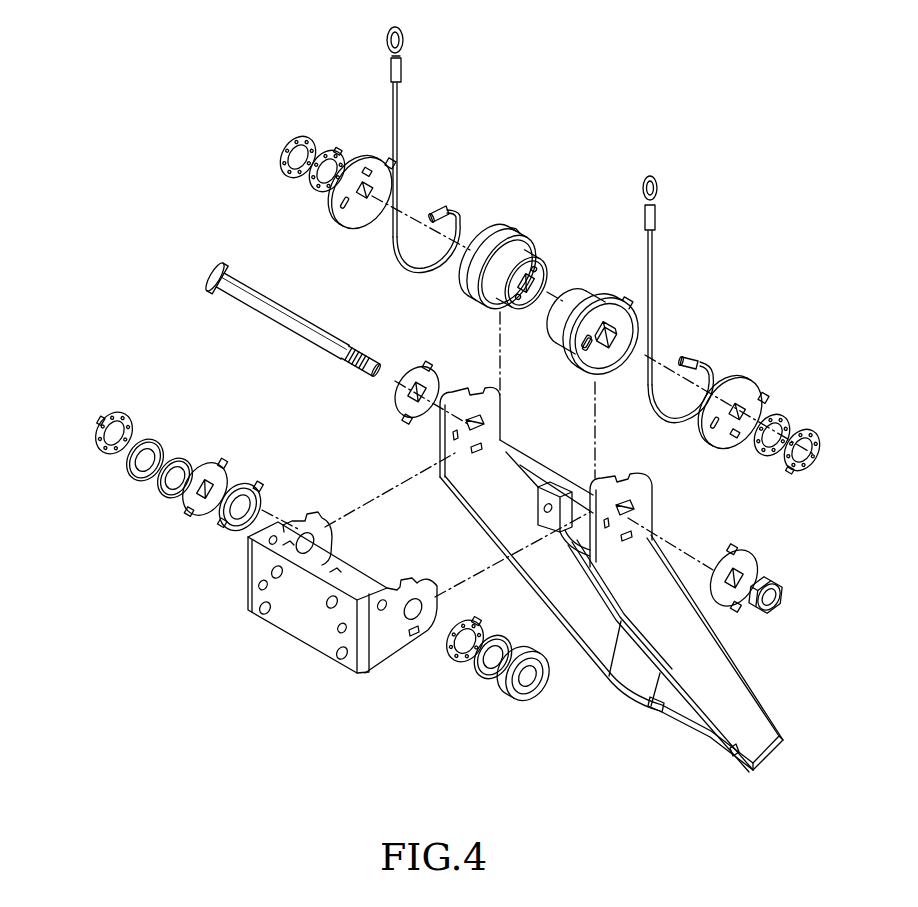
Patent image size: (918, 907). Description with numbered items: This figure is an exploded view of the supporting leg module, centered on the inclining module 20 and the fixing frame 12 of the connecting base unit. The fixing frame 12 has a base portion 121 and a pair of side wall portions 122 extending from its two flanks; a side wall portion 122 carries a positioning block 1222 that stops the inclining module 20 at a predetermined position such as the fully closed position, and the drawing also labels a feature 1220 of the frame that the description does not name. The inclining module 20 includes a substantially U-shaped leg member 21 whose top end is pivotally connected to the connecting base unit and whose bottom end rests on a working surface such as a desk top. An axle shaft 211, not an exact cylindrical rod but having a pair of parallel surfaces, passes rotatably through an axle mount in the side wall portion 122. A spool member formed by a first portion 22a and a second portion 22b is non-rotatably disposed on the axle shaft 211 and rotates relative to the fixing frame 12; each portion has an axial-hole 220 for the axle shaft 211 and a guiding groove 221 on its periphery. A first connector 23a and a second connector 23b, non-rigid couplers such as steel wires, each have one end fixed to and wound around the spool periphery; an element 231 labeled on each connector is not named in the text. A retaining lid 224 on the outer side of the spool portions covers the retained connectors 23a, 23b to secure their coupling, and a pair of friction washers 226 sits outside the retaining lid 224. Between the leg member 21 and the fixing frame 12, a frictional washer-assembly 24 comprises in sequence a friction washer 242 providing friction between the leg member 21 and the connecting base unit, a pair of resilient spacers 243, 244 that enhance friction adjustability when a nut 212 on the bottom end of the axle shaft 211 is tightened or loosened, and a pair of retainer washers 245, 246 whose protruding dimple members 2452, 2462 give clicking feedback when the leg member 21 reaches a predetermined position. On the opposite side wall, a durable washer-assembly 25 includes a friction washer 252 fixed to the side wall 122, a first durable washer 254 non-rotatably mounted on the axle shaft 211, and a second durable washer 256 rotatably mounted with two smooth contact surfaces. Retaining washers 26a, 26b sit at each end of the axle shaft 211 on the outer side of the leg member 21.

The inclining module 20 is at (575, 149).
The leg member 21 is at (722, 679).
The axle shaft 211 is at (290, 299).
The nut 212 is at (778, 580).
The first portion of spool member 22a is at (582, 300).
The second portion of spool member 22b is at (503, 258).
The axial-hole 220 is at (616, 356).
The guiding groove 221 is at (579, 346).
The retaining lid 224 is at (738, 376).
The friction washers 226 is at (774, 412).
The first connector 23a is at (652, 256).
The second connector 23b is at (398, 106).
The clip 231 is at (436, 208).
The frictional washer-assembly 24 is at (177, 582).
The friction washer 242 is at (104, 454).
The resilient spacer 243 is at (140, 475).
The resilient spacer 244 is at (170, 492).
The retainer washer 245 is at (200, 506).
The dimple member 2452 is at (220, 463).
The retainer washer 246 is at (236, 524).
The dimple member 2462 is at (260, 487).
The durable washer-assembly 25 is at (423, 723).
The friction washer 252 is at (458, 662).
The first durable washer 254 is at (490, 680).
The second durable washer 256 is at (520, 696).
The retaining washer 26a is at (740, 563).
The retaining washer 26b is at (428, 386).
The fixing frame 12 is at (246, 593).
The base portion 121 is at (302, 630).
The side wall portion 122 is at (303, 521).
The bent edge 1220 is at (368, 668).
The positioning block 1222 is at (436, 606).